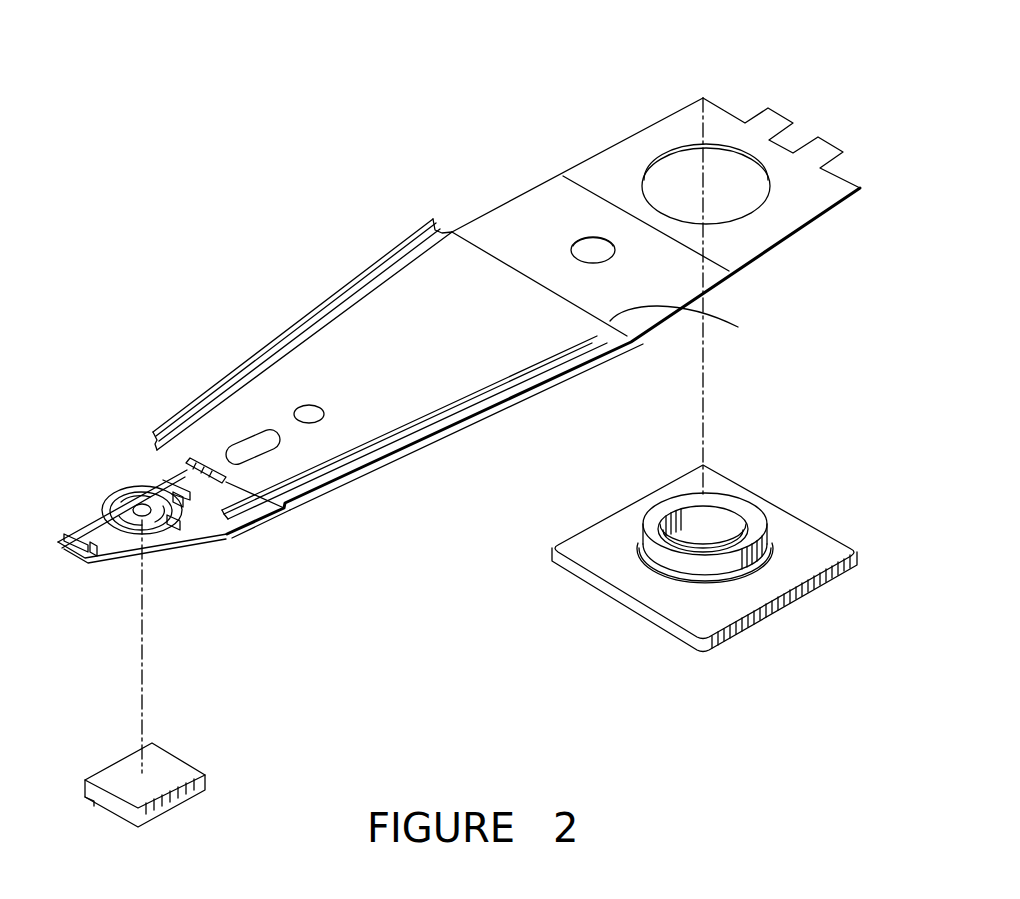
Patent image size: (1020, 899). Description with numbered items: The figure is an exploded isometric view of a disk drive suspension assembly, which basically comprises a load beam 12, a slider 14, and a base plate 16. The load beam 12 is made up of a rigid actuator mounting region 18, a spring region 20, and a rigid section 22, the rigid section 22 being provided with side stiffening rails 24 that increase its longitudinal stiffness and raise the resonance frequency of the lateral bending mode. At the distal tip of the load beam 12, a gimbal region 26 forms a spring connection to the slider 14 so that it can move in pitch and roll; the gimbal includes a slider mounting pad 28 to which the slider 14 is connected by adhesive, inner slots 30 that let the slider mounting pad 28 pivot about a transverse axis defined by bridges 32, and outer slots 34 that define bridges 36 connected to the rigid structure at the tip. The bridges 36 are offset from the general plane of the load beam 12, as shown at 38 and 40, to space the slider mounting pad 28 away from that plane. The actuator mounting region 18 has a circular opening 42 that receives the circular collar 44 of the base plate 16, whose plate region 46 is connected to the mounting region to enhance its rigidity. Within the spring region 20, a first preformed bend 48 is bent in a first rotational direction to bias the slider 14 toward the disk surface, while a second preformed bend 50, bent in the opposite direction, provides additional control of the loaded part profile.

The load beam 12 is at (413, 170).
The slider 14 is at (177, 770).
The base plate 16 is at (772, 575).
The rigid actuator mounting region 18 is at (658, 143).
The spring region 20 is at (530, 227).
The rigid section 22 is at (410, 338).
The stiffening rails 24 is at (305, 322).
The gimbal region 26 is at (113, 455).
The slider mounting pad 28 is at (142, 520).
The inner slots 30 is at (115, 512).
The bridges 32 is at (123, 503).
The outer slots 34 is at (218, 472).
The bridges 36 is at (170, 487).
The offset 38 is at (190, 498).
The offset 40 is at (75, 535).
The circular opening 42 is at (723, 218).
The circular collar 44 is at (747, 512).
The plate region 46 is at (692, 612).
The first preformed bend 48 is at (597, 193).
The second preformed bend 50 is at (686, 334).